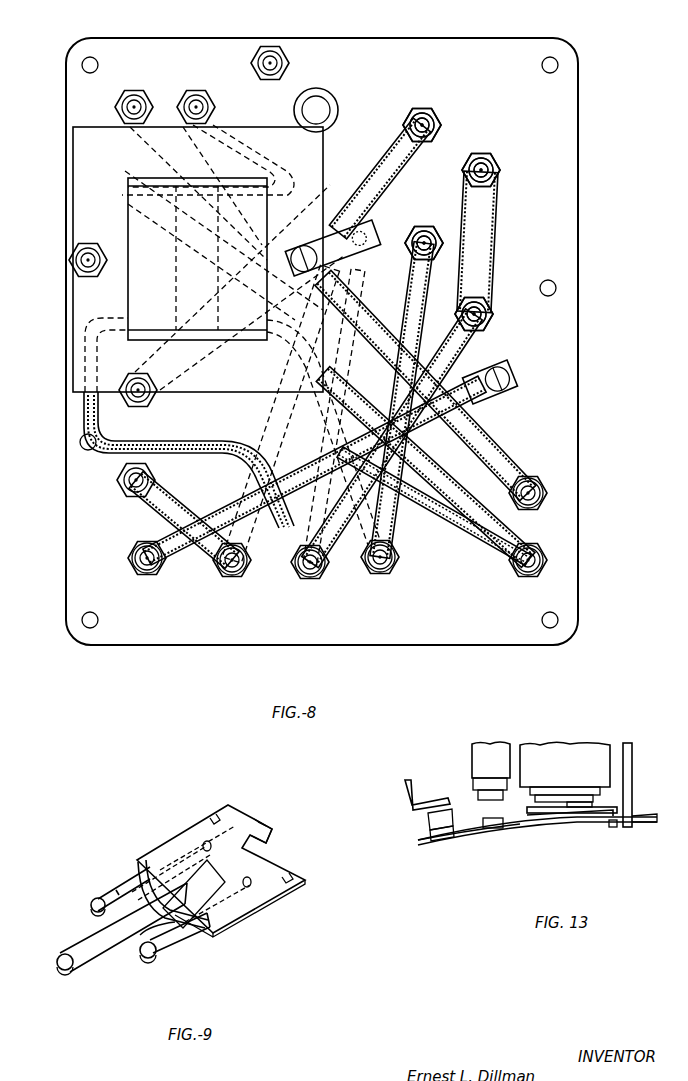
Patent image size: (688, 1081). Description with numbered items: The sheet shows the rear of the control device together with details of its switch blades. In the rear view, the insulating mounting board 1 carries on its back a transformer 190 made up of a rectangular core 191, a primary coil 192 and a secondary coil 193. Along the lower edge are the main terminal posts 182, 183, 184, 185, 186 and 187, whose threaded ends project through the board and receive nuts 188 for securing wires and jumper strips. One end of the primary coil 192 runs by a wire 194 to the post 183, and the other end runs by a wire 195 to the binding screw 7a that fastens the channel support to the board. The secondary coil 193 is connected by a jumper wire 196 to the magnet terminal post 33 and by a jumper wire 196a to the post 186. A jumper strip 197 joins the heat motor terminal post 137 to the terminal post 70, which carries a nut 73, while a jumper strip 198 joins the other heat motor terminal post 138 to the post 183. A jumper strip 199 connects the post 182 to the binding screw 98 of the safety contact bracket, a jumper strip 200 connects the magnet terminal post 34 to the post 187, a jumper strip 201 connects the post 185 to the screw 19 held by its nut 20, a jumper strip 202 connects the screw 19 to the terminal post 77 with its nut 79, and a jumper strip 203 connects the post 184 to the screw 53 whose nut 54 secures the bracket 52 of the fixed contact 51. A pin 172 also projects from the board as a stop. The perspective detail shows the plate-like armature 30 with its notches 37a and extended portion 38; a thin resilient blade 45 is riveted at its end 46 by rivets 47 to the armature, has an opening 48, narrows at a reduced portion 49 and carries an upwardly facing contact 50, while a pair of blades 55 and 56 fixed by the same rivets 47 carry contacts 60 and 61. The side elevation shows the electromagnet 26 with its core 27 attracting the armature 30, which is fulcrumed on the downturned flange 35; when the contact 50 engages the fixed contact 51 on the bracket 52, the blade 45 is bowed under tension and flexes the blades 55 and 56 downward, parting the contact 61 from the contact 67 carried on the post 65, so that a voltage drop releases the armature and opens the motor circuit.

In FIG. 8, the supporting member or mounting board 1 is at (578, 368).
In FIG. 8, the screw 7a is at (352, 300).
In FIG. 8, the screw 19 is at (484, 312).
In FIG. 8, the nut 20 is at (488, 318).
In FIG. 13, the electromagnet 26 is at (575, 752).
In FIG. 13, the core 27 is at (580, 805).
In FIG. 9, the armature 30 is at (230, 927).
In FIG. 13, the armature 30 is at (547, 808).
In FIG. 8, the terminal post 33 is at (197, 100).
In FIG. 8, the terminal post 34 is at (135, 100).
In FIG. 13, the downturned flange 35 is at (633, 775).
In FIG. 9, the cut-outs or notches 37a is at (214, 822).
In FIG. 9, the extended portion 38 is at (270, 828).
In FIG. 9, the contact carrying member 45 is at (190, 937).
In FIG. 13, the contact carrying member 45 is at (530, 825).
In FIG. 9, the end of flexible member 46 is at (265, 905).
In FIG. 9, the rivets 47 is at (205, 840).
In FIG. 13, the rivets 47 is at (613, 830).
In FIG. 9, the aperture or opening 48 is at (143, 907).
In FIG. 9, the reduced width portion 49 is at (100, 953).
In FIG. 13, the reduced width portion 49 is at (465, 834).
In FIG. 9, the contact member 50 is at (62, 955).
In FIG. 13, the contact member 50 is at (428, 826).
In FIG. 13, the fixed contact member 51 is at (440, 836).
In FIG. 13, the bracket 52 is at (402, 792).
In FIG. 8, the screw 53 is at (416, 238).
In FIG. 8, the nut 54 is at (432, 232).
In FIG. 9, the contact carrying blade 55 is at (168, 948).
In FIG. 9, the contact carrying blade 56 is at (116, 875).
In FIG. 13, the contact carrying blade 56 is at (586, 822).
In FIG. 9, the contact member 60 is at (95, 898).
In FIG. 9, the contact member 61 is at (147, 958).
In FIG. 13, the contact member 61 is at (493, 830).
In FIG. 13, the post 65 is at (490, 790).
In FIG. 13, the contact member 67 is at (478, 798).
In FIG. 8, the terminal post 70 is at (418, 120).
In FIG. 8, the nut 73 is at (432, 112).
In FIG. 8, the terminal post 77 is at (484, 162).
In FIG. 8, the nut 79 is at (496, 170).
In FIG. 8, the screw 98 is at (504, 380).
In FIG. 8, the heat motor terminal post 137 is at (150, 395).
In FIG. 8, the heat motor terminal post 138 is at (130, 482).
In FIG. 8, the pin 172 is at (271, 58).
In FIG. 8, the terminal post 182 is at (148, 568).
In FIG. 8, the terminal post 183 is at (229, 572).
In FIG. 8, the terminal post 184 is at (311, 574).
In FIG. 8, the terminal post 185 is at (382, 570).
In FIG. 8, the terminal post 186 is at (526, 572).
In FIG. 8, the terminal post 187 is at (542, 505).
In FIG. 8, the nuts 188 is at (140, 545).
In FIG. 8, the transformer 190 is at (67, 309).
In FIG. 8, the core 191 is at (80, 206).
In FIG. 8, the primary coil 192 is at (177, 280).
In FIG. 8, the secondary coil 193 is at (197, 259).
In FIG. 8, the wire 194 is at (238, 447).
In FIG. 8, the wire 195 is at (283, 313).
In FIG. 8, the jumper wire 196 is at (260, 147).
In FIG. 8, the jumper wire 196a is at (478, 540).
In FIG. 8, the jumper strip 197 is at (368, 160).
In FIG. 8, the jumper strip 198 is at (180, 504).
In FIG. 8, the jumper strip 199 is at (304, 466).
In FIG. 8, the jumper strip 200 is at (496, 446).
In FIG. 8, the jumper strip 201 is at (427, 455).
In FIG. 8, the jumper strip 202 is at (488, 226).
In FIG. 8, the jumper strip 203 is at (408, 312).